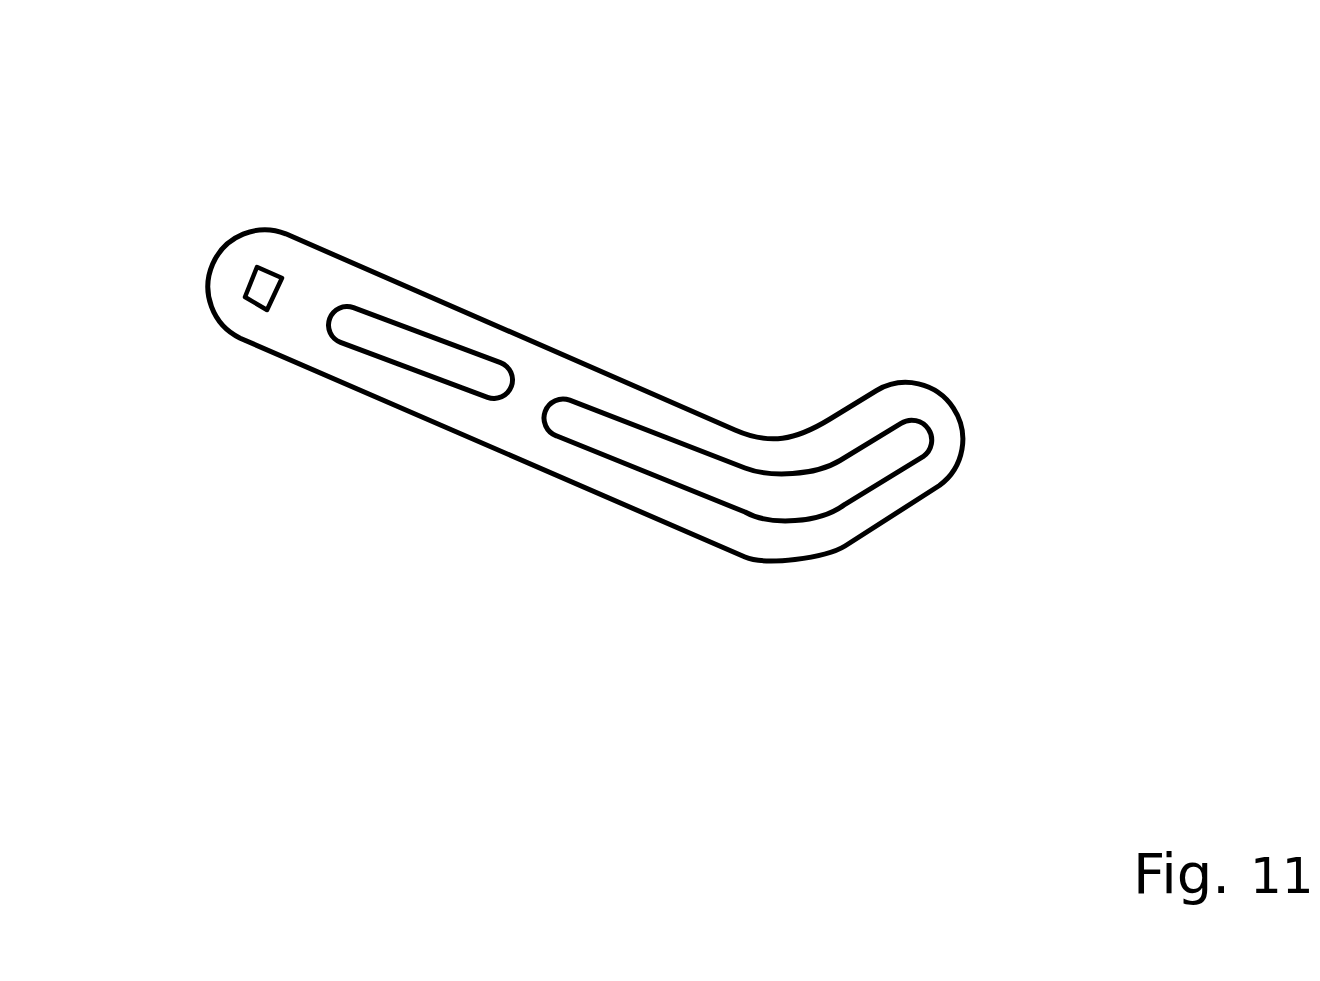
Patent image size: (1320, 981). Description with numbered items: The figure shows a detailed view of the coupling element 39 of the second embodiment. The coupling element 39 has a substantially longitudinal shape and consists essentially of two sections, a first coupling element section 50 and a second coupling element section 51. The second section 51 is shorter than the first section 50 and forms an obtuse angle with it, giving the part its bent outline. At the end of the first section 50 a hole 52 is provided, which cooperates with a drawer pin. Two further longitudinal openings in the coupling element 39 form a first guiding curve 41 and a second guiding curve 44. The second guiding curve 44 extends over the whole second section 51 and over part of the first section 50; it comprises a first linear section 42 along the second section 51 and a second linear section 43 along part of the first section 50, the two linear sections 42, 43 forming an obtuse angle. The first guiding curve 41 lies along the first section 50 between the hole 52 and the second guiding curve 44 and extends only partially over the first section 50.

The coupling element 39 is at (741, 126).
The first guiding curve 41 is at (410, 342).
The first linear section 42 is at (877, 467).
The second linear section 43 is at (680, 470).
The second guiding curve 44 is at (920, 685).
The first coupling element section 50 is at (773, 400).
The second coupling element section 51 is at (910, 357).
The hole 52 is at (245, 292).